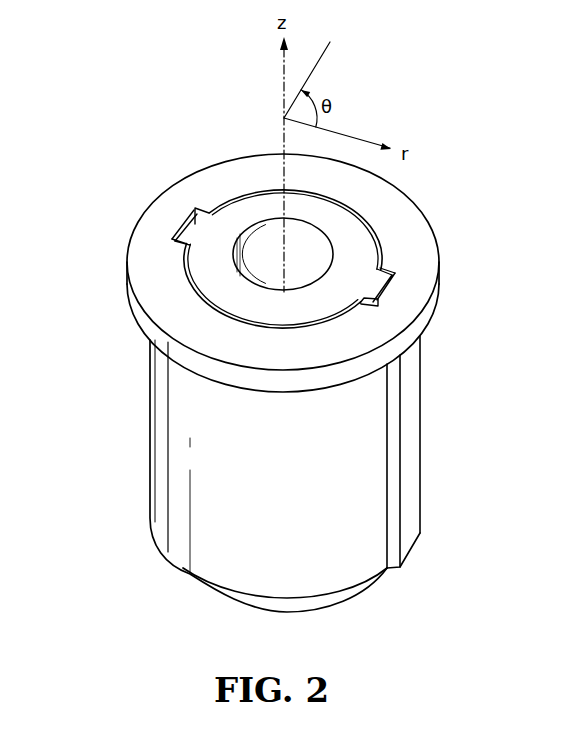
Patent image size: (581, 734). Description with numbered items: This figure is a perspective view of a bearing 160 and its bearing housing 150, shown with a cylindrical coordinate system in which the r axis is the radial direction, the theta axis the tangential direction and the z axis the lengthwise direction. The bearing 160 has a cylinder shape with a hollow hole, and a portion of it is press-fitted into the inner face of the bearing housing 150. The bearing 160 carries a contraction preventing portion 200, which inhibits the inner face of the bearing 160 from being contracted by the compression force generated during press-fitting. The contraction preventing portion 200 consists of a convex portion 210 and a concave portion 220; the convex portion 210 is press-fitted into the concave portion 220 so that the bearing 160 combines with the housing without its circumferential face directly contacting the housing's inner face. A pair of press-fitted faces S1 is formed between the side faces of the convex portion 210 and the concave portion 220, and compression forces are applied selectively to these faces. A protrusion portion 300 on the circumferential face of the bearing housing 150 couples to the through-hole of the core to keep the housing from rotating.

The bearing housing 150 is at (148, 263).
The bearing 160 is at (215, 283).
The contraction preventing portion 200 is at (393, 261).
The convex portion 210 is at (193, 211).
The concave portion 220 is at (175, 238).
The press-fitted faces S1 is at (383, 299).
The protrusion portion 300 is at (410, 477).